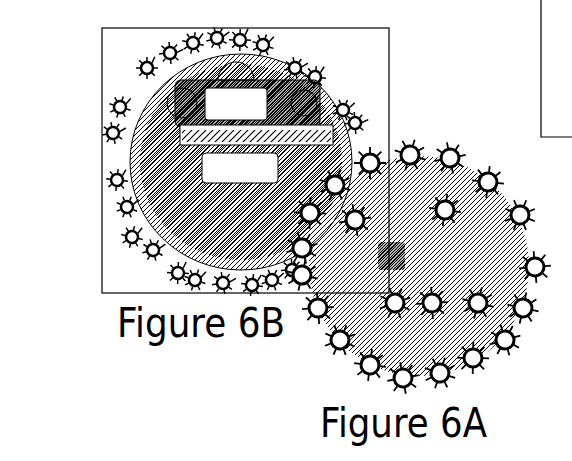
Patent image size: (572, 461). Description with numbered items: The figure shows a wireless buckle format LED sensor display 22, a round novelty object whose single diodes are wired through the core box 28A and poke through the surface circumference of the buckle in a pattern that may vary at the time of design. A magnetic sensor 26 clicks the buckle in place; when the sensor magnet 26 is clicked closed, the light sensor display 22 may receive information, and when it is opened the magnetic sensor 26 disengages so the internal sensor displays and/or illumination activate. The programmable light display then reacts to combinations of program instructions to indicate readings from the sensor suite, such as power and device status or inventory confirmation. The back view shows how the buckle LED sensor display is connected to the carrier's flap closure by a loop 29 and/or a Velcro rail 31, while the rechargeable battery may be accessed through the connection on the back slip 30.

In FIG. 6A, the wireless buckle format LED sensor display 22 is at (359, 309).
In FIG. 6A, the magnetic sensor 26 is at (441, 270).
In FIG. 6B, the core box 28A is at (256, 116).
In FIG. 6B, the loop 29 is at (215, 73).
In FIG. 6B, the back slip 30 is at (312, 96).
In FIG. 6B, the Velcro rail 31 is at (182, 145).